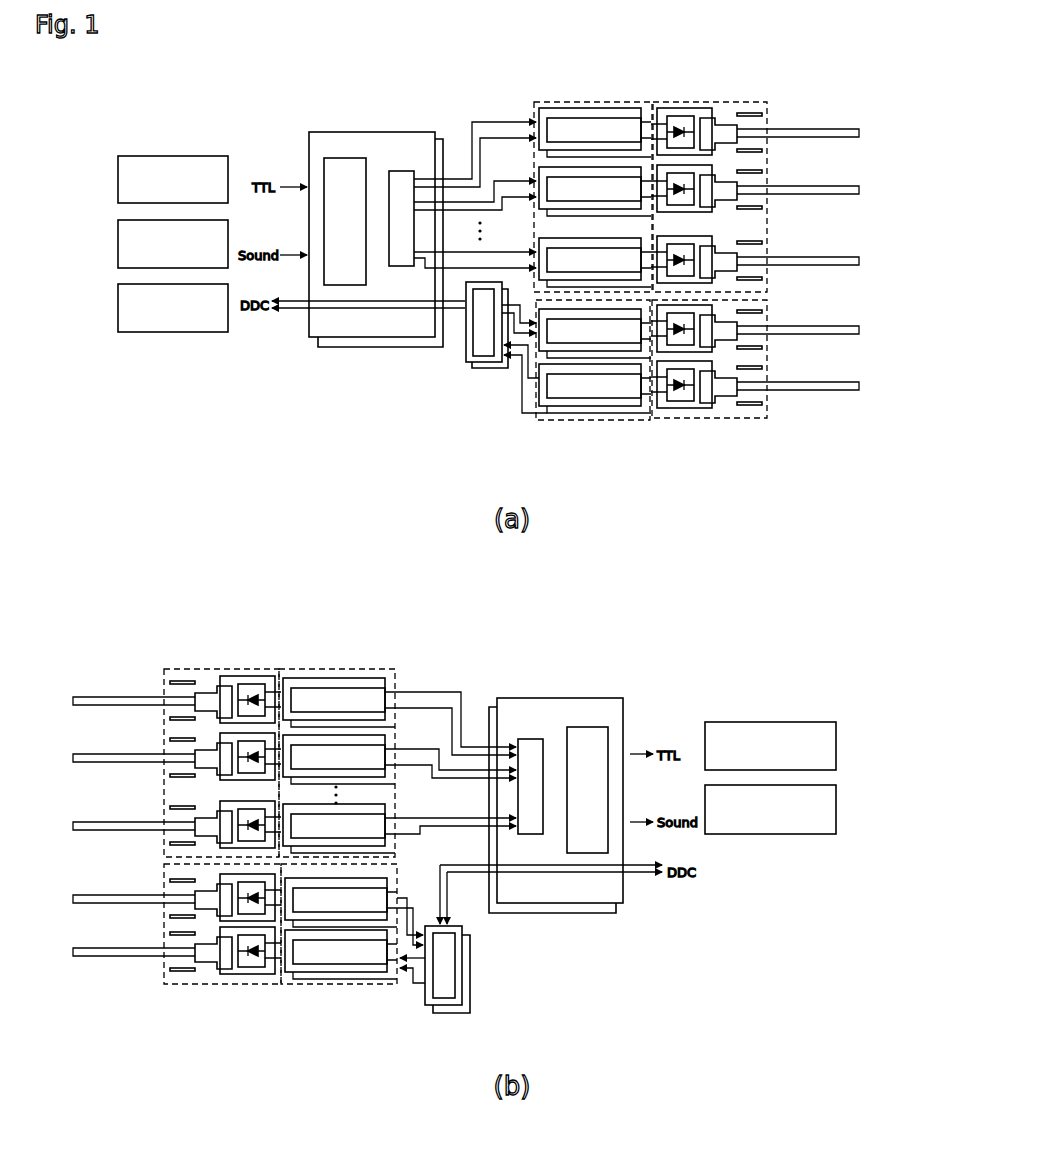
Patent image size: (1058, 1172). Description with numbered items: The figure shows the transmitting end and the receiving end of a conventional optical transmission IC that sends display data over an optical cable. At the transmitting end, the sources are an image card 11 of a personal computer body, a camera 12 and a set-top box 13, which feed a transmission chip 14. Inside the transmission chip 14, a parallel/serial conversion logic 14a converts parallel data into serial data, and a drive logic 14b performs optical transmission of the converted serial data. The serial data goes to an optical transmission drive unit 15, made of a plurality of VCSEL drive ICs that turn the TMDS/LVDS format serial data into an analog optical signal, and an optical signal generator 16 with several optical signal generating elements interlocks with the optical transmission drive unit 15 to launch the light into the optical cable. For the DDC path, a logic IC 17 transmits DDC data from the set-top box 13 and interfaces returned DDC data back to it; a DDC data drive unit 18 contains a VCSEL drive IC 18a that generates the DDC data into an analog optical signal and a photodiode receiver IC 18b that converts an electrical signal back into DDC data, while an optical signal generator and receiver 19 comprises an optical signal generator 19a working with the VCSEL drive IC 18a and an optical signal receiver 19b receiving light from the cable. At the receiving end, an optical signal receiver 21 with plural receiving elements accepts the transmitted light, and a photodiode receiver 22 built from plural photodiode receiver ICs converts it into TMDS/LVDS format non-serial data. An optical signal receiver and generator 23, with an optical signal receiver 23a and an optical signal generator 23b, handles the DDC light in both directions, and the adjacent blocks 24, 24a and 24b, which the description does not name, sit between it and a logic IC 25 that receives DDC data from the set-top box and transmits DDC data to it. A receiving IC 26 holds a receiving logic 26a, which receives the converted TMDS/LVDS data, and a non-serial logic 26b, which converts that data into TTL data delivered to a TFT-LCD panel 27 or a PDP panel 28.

In FIG. 1a, the image card 11 is at (118, 178).
In FIG. 1a, the camera 12 is at (118, 246).
In FIG. 1a, the set-top box 13 is at (118, 306).
In FIG. 1a, the transmission chip 14 is at (376, 243).
In FIG. 1a, the parallel/serial conversion logic 14a is at (343, 158).
In FIG. 1a, the drive logic 14b is at (402, 171).
In FIG. 1a, the optical transmission drive unit 15 is at (590, 102).
In FIG. 1a, the optical signal generator 16 is at (746, 102).
In FIG. 1a, the logic IC 17 is at (483, 362).
In FIG. 1a, the DDC data drive unit 18 is at (594, 387).
In FIG. 1a, the VCSEL drive IC 18a is at (547, 408).
In FIG. 1a, the photodiode receiver IC 18b is at (633, 398).
In FIG. 1a, the optical signal generator and receiver 19 is at (755, 386).
In FIG. 1a, the optical signal generator 19a is at (682, 330).
In FIG. 1a, the optical signal receiver 19b is at (685, 395).
In FIG. 1b, the optical signal receiver 21 is at (205, 669).
In FIG. 1b, the photodiode receiver 22 is at (357, 669).
In FIG. 1b, the optical signal receiver and generator 23 is at (177, 941).
In FIG. 1b, the optical signal receiver 23a is at (258, 897).
In FIG. 1b, the optical signal generator 23b is at (250, 960).
In FIG. 1b, the DDC receiver module array 24 is at (337, 949).
In FIG. 1b, the DDC receiver module 24a is at (375, 918).
In FIG. 1b, the DDC receiver module 24b is at (302, 972).
In FIG. 1b, the logic IC 25 is at (462, 975).
In FIG. 1b, the receiving IC 26 is at (556, 807).
In FIG. 1b, the receiving logic 26a is at (527, 739).
In FIG. 1b, the non-serial logic 26b is at (592, 727).
In FIG. 1b, the TFT-LCD panel 27 is at (768, 722).
In FIG. 1b, the PDP panel 28 is at (768, 834).